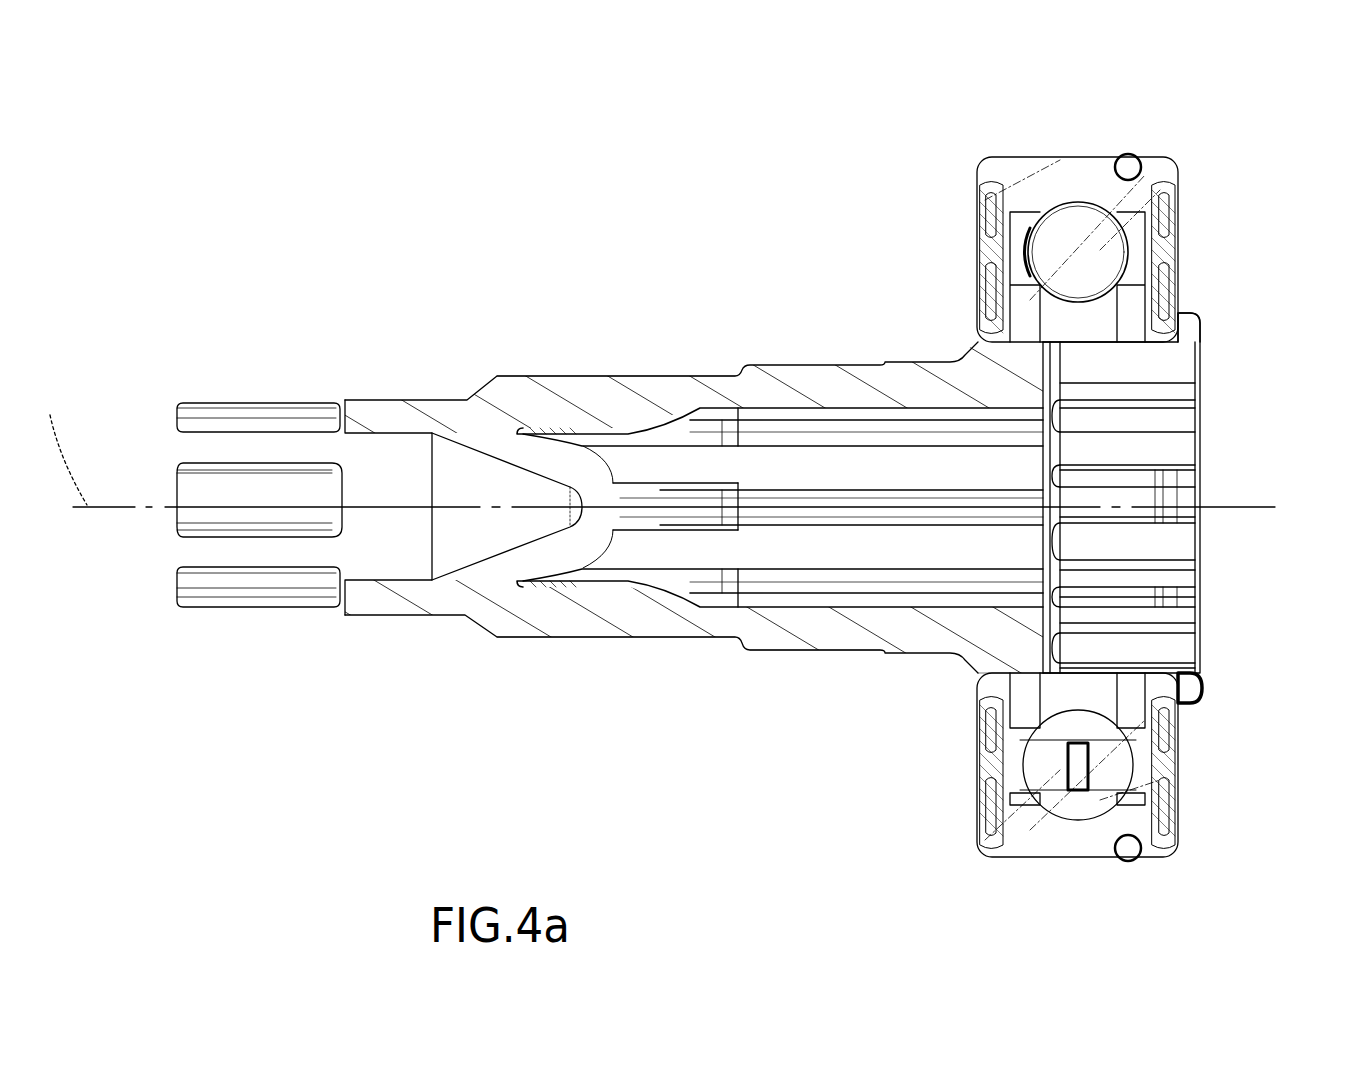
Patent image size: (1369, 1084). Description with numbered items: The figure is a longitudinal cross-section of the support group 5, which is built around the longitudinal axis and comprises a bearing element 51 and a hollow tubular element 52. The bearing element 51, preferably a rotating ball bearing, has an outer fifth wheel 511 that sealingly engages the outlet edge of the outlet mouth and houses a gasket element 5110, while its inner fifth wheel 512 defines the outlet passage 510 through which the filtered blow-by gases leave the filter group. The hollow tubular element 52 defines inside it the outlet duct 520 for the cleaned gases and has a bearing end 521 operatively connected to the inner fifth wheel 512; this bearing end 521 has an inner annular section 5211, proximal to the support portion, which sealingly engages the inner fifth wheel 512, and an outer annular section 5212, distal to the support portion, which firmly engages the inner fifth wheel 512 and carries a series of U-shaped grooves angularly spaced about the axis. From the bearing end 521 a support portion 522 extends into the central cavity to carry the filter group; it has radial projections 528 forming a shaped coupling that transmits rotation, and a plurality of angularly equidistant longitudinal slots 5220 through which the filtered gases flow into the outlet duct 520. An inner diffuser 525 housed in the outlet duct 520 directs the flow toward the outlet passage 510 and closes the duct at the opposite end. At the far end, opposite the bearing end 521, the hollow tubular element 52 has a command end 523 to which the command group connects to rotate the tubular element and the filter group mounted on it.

The support group 5 is at (333, 187).
The bearing element 51 is at (1145, 503).
The outer fifth wheel 511 is at (1075, 160).
The inner fifth wheel 512 is at (1130, 310).
The outlet passage 510 is at (1182, 340).
The gasket element 5110 is at (1128, 870).
The outlet duct 520 is at (1206, 472).
The outer annular section 5212 is at (1115, 665).
The hollow tubular element 52 is at (684, 546).
The bearing end 521 is at (945, 665).
The support portion 522 is at (790, 650).
The command end 523 is at (278, 642).
The inner diffuser 525 is at (585, 540).
The radial projections 528 is at (815, 290).
The longitudinal slots 5220 is at (788, 552).
The inner annular section 5211 is at (1030, 655).